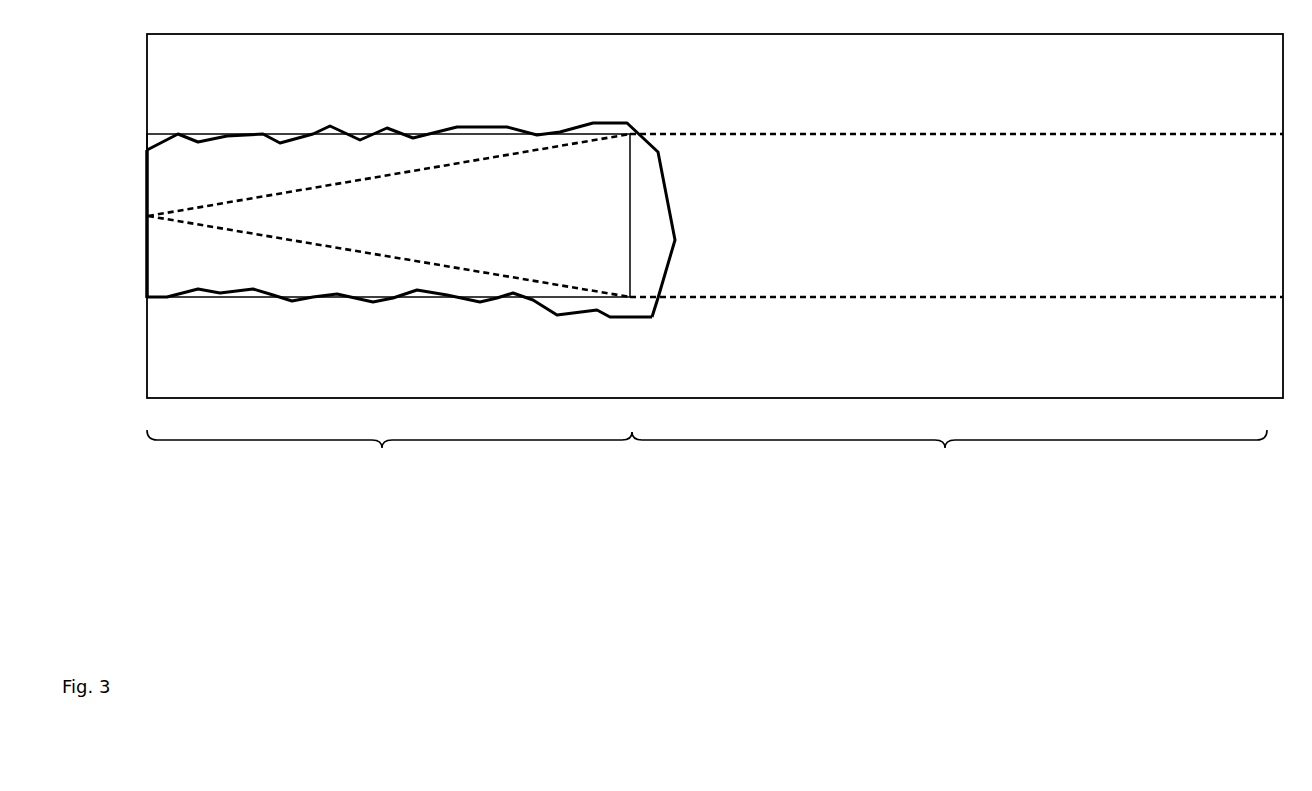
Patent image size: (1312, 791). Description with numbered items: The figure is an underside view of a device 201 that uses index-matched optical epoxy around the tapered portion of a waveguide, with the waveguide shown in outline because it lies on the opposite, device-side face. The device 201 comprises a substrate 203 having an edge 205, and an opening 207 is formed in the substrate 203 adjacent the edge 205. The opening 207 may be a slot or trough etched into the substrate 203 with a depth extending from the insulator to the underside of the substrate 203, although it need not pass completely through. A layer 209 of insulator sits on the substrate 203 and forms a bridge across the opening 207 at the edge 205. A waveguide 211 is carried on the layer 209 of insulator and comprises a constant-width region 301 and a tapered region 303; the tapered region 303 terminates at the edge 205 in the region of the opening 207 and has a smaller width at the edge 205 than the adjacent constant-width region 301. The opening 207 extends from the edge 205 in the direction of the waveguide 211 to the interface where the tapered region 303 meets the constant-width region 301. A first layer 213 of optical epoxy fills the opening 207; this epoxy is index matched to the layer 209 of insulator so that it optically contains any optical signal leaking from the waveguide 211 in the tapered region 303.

The device 201 is at (238, 498).
The substrate 203 is at (228, 84).
The edge 205 is at (140, 217).
The opening 207 is at (190, 301).
The layer of insulator 209 is at (155, 142).
The waveguide 211 is at (220, 230).
The first layer of optical epoxy 213 is at (250, 184).
The constant-width region 301 is at (956, 304).
The tapered region 303 is at (389, 452).